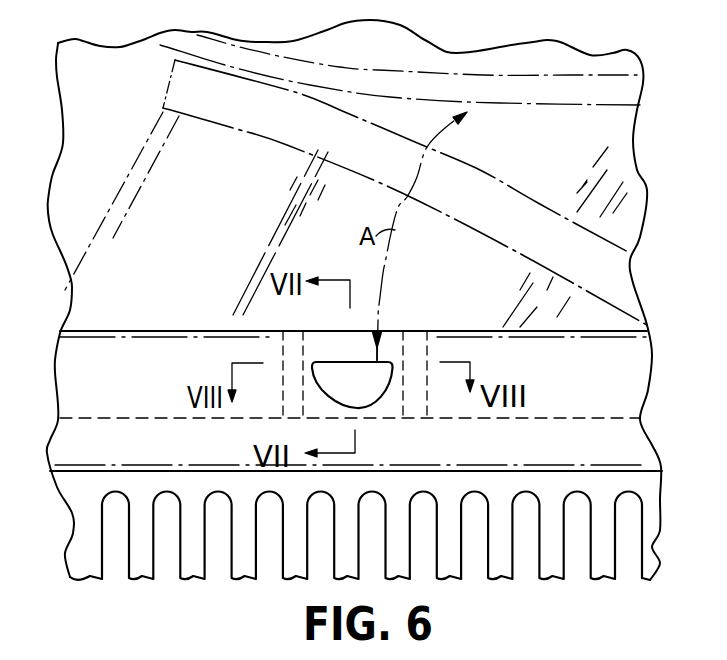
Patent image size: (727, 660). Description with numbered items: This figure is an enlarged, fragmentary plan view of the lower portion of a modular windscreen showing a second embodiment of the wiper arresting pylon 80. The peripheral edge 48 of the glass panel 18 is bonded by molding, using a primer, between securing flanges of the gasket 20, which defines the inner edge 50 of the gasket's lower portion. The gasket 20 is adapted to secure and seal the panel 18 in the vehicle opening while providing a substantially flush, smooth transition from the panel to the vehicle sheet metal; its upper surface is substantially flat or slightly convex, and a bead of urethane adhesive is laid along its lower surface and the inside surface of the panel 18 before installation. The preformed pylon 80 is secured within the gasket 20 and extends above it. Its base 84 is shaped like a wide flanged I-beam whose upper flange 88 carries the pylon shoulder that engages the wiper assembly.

The panel 18 is at (590, 177).
The gasket 20 is at (101, 296).
The peripheral edge 48 is at (83, 418).
The inner edge 50 is at (143, 328).
The wiper arresting pylon 80 is at (408, 424).
The pylon base 84 is at (417, 343).
The upper flange 88 is at (386, 322).